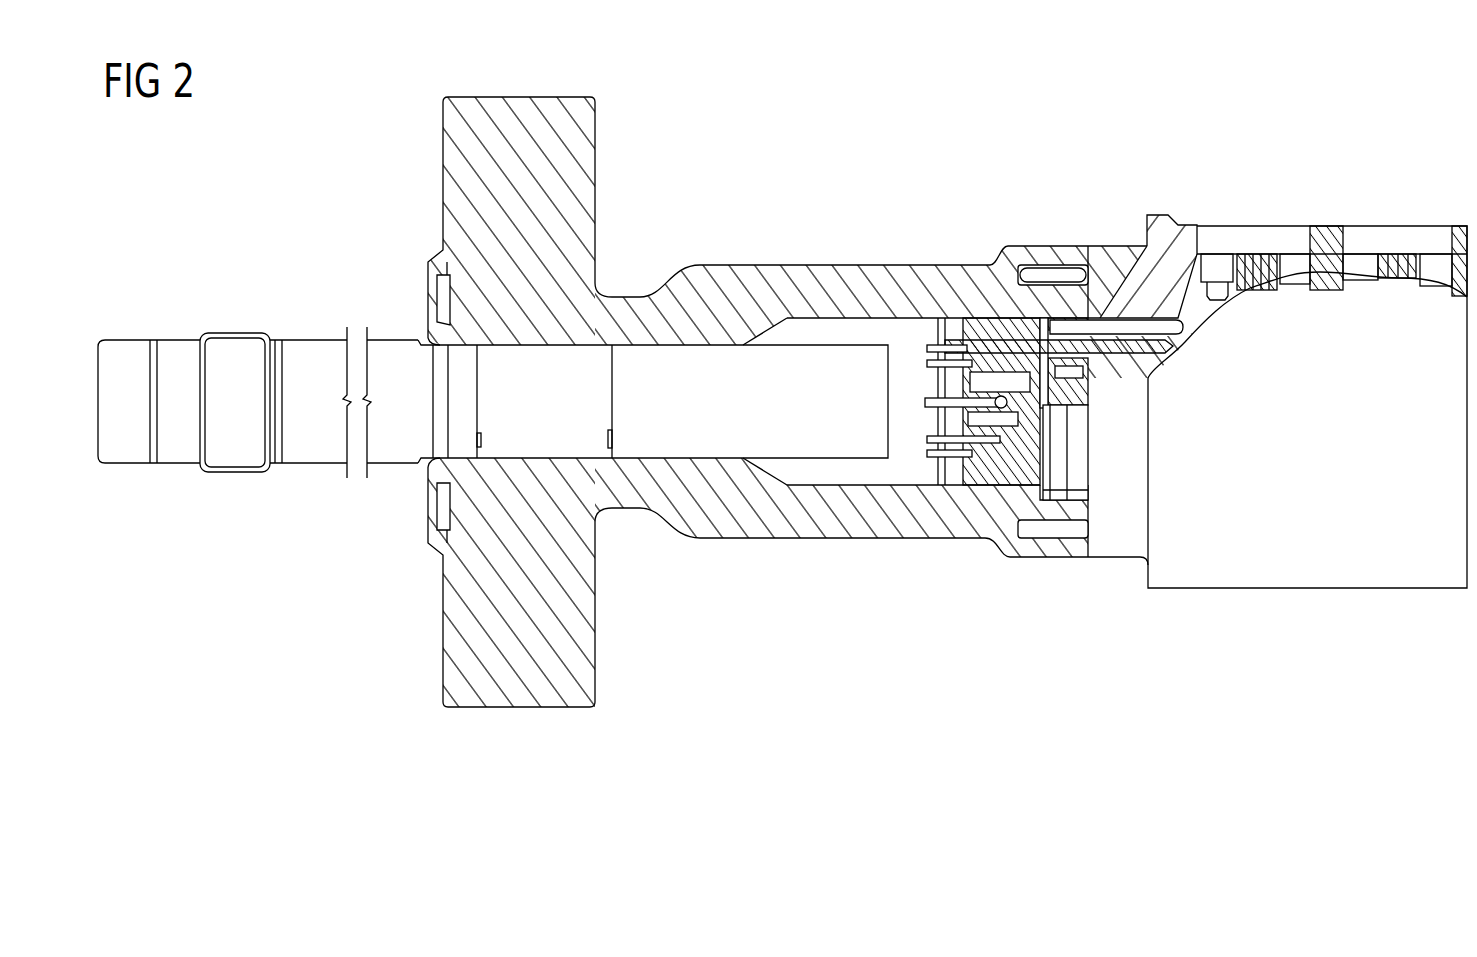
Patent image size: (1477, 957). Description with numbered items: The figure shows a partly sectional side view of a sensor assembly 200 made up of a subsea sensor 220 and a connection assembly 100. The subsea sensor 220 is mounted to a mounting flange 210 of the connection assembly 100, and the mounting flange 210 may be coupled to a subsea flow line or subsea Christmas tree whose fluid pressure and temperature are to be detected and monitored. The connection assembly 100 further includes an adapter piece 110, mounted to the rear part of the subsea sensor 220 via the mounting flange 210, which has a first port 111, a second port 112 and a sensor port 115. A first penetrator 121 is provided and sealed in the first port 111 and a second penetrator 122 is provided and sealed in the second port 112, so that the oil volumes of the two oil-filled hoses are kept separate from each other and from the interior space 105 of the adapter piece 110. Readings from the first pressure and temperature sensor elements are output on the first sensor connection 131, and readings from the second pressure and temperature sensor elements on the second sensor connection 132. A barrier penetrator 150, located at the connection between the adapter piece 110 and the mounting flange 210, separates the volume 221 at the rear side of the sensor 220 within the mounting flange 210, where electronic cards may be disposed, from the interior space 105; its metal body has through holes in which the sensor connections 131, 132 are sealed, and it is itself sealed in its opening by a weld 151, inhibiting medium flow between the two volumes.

The connection assembly 100 is at (1148, 434).
The interior space 105 is at (1170, 336).
The adapter piece 110 is at (1277, 376).
The first port 111 is at (1377, 236).
The second port 112 is at (1297, 236).
The sensor port 115 is at (1072, 323).
The first penetrator 121 is at (1435, 273).
The second penetrator 122 is at (1218, 272).
The first sensor connection 131 is at (918, 428).
The second sensor connection 132 is at (918, 338).
The barrier penetrator 150 is at (963, 325).
The weld 151 is at (1020, 318).
The sensor assembly 200 is at (623, 433).
The mounting flange 210 is at (590, 652).
The subsea sensor 220 is at (693, 356).
The volume 221 is at (883, 340).